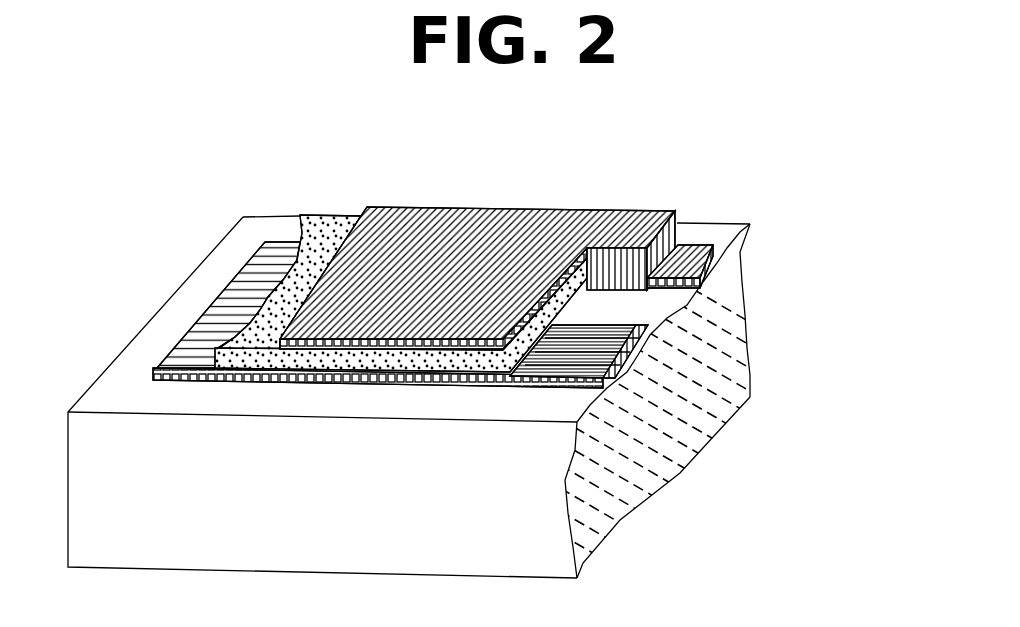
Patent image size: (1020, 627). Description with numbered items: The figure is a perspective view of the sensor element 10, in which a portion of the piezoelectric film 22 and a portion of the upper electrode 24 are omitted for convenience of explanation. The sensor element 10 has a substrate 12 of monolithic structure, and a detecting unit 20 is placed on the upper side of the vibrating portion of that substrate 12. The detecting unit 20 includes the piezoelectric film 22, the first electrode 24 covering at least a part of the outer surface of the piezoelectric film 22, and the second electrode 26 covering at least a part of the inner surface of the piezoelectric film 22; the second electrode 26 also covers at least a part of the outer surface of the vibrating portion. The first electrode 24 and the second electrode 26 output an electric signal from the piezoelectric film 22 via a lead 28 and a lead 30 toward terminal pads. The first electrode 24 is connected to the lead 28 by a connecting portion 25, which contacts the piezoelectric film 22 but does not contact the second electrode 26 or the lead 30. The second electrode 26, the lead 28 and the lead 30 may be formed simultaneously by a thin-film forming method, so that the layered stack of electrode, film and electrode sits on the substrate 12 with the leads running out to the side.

The sensor element 10 is at (193, 187).
The substrate 12 is at (163, 542).
The detecting unit 20 is at (488, 263).
The piezoelectric film 22 is at (340, 230).
The first electrode 24 is at (437, 237).
The connecting portion 25 is at (678, 221).
The second electrode 26 is at (253, 250).
The lead 28 is at (683, 232).
The lead 30 is at (525, 387).